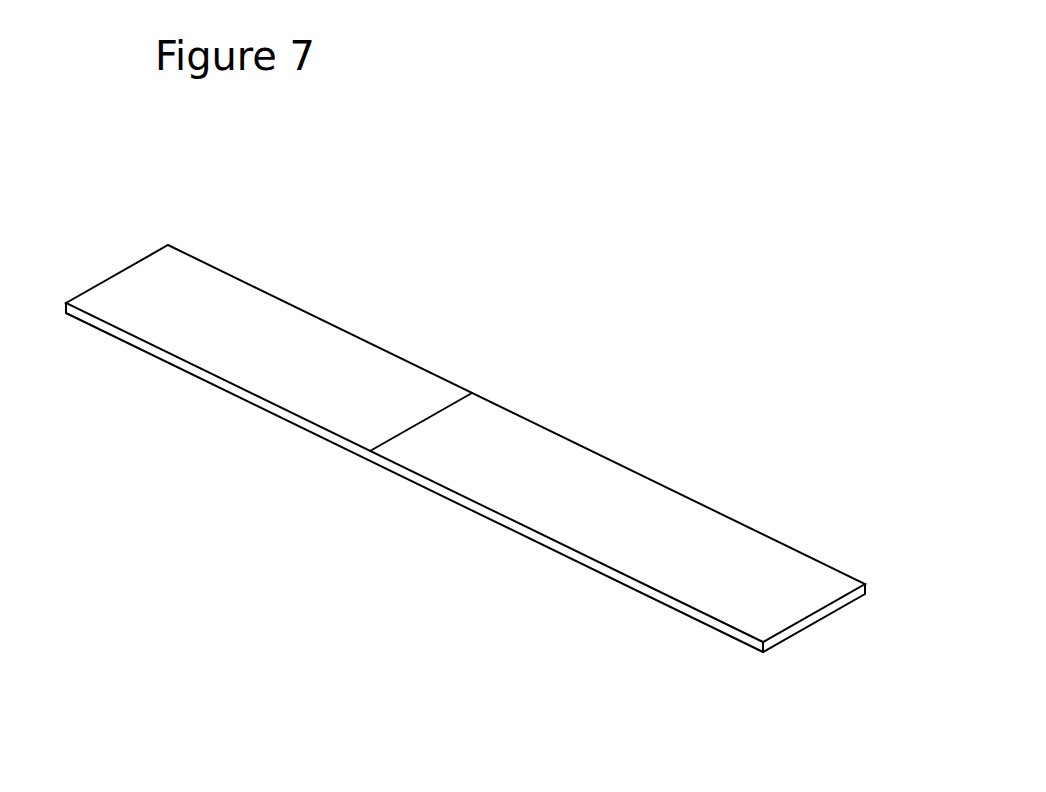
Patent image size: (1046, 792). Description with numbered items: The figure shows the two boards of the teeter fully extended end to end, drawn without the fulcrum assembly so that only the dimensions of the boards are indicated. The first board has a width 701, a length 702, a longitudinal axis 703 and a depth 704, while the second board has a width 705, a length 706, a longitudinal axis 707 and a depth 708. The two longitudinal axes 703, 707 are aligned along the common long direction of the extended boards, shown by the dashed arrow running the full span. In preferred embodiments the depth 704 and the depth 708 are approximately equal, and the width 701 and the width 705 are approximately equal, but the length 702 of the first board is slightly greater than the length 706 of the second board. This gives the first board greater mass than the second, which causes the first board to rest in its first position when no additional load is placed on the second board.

The width 701 is at (885, 620).
The length 702 is at (755, 670).
The longitudinal axis 703 is at (538, 366).
The depth 704 is at (866, 585).
The width 705 is at (163, 239).
The length 706 is at (369, 463).
The longitudinal axis 707 is at (878, 537).
The depth 708 is at (64, 313).